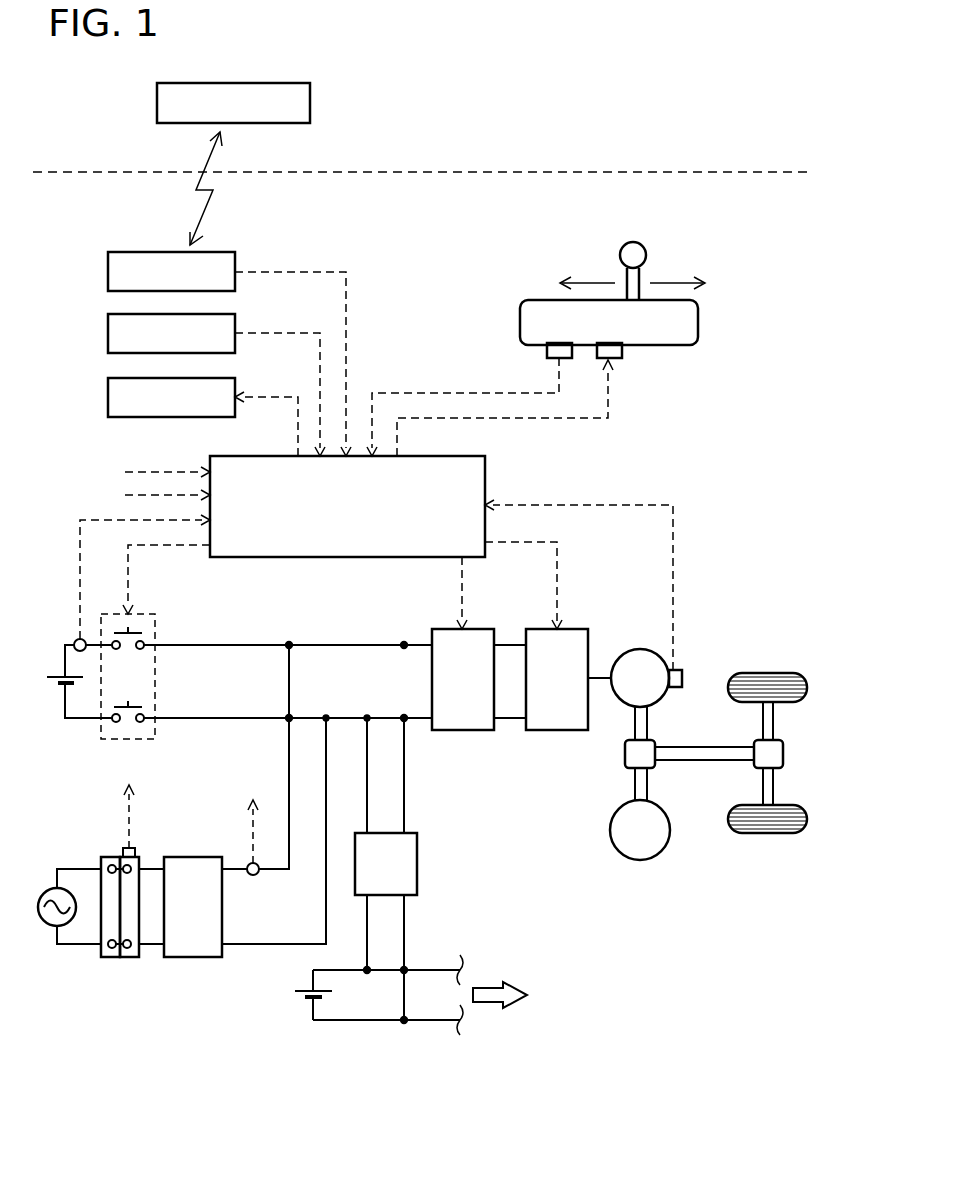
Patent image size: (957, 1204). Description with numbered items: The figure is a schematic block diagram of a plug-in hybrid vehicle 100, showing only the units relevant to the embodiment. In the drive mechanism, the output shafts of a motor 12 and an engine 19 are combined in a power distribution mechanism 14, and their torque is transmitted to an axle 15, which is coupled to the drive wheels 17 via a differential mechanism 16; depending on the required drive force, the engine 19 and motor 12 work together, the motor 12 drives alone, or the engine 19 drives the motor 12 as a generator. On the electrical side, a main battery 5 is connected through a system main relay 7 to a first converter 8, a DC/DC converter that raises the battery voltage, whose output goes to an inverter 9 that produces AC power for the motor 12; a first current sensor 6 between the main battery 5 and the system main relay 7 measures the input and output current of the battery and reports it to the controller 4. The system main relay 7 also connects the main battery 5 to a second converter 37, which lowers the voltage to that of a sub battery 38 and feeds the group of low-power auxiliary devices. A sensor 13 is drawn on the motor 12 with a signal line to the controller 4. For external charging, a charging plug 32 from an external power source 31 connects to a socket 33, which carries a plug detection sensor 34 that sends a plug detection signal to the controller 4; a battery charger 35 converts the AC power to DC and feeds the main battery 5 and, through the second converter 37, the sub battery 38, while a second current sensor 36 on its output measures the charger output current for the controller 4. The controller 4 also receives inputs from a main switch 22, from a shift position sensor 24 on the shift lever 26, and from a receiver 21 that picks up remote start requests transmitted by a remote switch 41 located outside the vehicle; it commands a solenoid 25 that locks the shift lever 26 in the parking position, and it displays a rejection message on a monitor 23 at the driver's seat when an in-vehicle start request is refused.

The hybrid vehicle 100 is at (420, 238).
The controller 4 is at (485, 466).
The main battery 5 is at (60, 675).
The first current sensor 6 is at (74, 637).
The system main relay 7 is at (142, 614).
The first converter 8 is at (478, 629).
The inverter 9 is at (577, 629).
The motor 12 is at (641, 649).
The rotation sensor 13 is at (680, 670).
The power distribution mechanism 14 is at (625, 754).
The axle 15 is at (700, 747).
The differential mechanism 16 is at (783, 752).
The drive wheels 17 is at (765, 673).
The engine 19 is at (640, 860).
The receiver 21 is at (108, 269).
The main switch 22 is at (108, 332).
The monitor 23 is at (108, 396).
The shift position sensor 24 is at (547, 351).
The solenoid 25 is at (622, 351).
The shift lever 26 is at (633, 243).
The external power source 31 is at (53, 888).
The charging plug 32 is at (110, 857).
The socket 33 is at (127, 957).
The plug detection sensor 34 is at (138, 848).
The battery charger 35 is at (191, 957).
The second current sensor 36 is at (248, 862).
The second converter 37 is at (417, 862).
The sub battery 38 is at (308, 1000).
The remote switch 41 is at (312, 100).